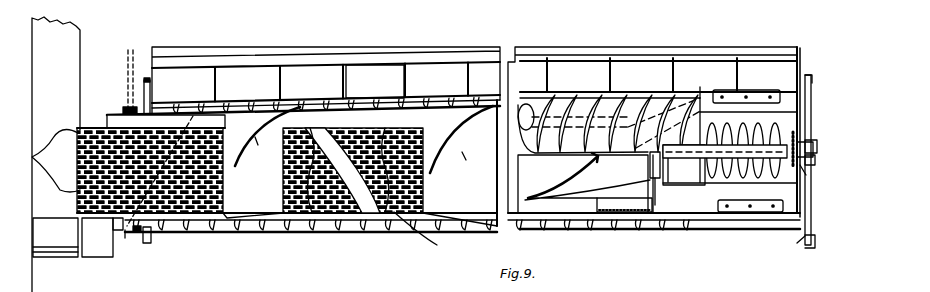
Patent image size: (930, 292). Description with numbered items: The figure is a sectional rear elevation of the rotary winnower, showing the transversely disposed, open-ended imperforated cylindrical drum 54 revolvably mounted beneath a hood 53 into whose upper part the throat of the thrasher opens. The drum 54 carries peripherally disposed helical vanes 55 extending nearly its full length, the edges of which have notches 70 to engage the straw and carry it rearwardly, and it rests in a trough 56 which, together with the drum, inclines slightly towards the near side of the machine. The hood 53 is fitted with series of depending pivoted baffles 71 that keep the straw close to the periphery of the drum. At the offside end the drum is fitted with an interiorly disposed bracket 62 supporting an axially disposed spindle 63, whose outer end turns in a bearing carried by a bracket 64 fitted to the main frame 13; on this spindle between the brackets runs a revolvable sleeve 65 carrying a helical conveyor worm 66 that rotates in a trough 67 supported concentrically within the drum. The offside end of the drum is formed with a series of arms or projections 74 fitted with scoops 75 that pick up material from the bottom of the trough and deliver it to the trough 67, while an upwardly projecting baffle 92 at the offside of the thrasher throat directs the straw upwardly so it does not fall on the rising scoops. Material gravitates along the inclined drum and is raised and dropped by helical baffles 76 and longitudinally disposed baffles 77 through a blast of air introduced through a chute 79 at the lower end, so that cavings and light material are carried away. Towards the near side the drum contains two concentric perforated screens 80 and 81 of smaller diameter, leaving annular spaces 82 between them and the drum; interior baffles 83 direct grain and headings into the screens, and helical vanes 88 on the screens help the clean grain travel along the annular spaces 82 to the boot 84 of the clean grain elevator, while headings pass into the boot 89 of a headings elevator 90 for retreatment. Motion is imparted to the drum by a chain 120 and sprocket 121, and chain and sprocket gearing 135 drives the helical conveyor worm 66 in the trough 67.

The main frame 13 is at (150, 243).
The hood 53 is at (310, 47).
The cylindrical drum 54 is at (262, 228).
The helical vanes 55 is at (650, 100).
The trough 56 is at (305, 232).
The bracket 62 is at (650, 172).
The spindle 63 is at (654, 184).
The bracket 64 is at (800, 228).
The revolvable sleeve 65 is at (740, 182).
The helical conveyor worm 66 is at (705, 172).
The trough 67 is at (680, 157).
The notches 70 is at (560, 100).
The pivoted baffles 71 is at (380, 80).
The arms or projections 74 is at (712, 97).
The scoops 75 is at (762, 90).
The helical baffles 76 is at (614, 185).
The longitudinally disposed baffles 77 is at (506, 142).
The chute 79 is at (56, 160).
The perforated screen 80 is at (348, 205).
The perforated screen 81 is at (180, 208).
The annular spaces 82 is at (210, 222).
The baffles 83 is at (364, 143).
The boot 84 is at (93, 257).
The helical vanes 88 is at (125, 238).
The boot 89 is at (55, 237).
The headings elevator 90 is at (56, 154).
The baffle 92 is at (742, 113).
The chain 120 is at (128, 58).
The sprocket 121 is at (128, 108).
The chain and sprocket gearing 135 is at (795, 131).